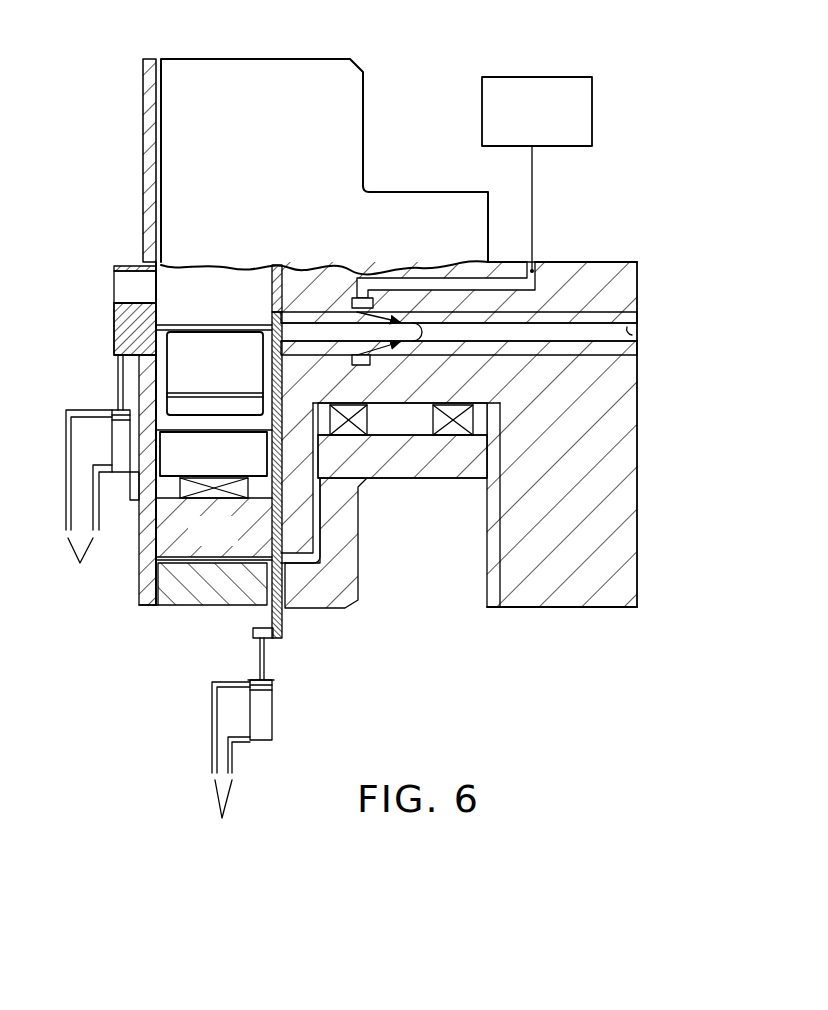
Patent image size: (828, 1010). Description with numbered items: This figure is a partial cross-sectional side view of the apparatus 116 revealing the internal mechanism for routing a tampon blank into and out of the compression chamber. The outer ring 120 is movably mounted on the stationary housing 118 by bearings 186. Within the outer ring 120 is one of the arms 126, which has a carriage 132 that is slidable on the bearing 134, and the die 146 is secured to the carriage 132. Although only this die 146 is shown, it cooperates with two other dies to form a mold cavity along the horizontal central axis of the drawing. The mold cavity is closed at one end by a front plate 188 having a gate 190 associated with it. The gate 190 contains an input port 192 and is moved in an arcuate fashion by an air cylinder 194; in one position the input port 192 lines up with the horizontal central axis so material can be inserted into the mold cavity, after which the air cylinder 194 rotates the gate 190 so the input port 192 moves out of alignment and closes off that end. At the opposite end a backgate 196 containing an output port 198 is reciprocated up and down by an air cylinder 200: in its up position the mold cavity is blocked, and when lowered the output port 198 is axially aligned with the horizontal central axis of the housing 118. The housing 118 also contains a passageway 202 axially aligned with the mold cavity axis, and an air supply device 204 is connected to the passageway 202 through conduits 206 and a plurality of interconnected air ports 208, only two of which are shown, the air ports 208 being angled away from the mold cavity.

The apparatus 116 is at (456, 46).
The stationary housing 118 is at (587, 255).
The outer ring 120 is at (295, 180).
The arm 126 is at (231, 545).
The carriage 132 is at (232, 466).
The bearing 134 is at (245, 488).
The die 146 is at (231, 380).
The bearings 186 is at (355, 435).
The front plate 188 is at (143, 190).
The gate 190 is at (114, 323).
The input port 192 is at (127, 303).
The air cylinder 194 is at (115, 447).
The backgate 196 is at (270, 321).
The output port 198 is at (270, 296).
The air cylinder 200 is at (272, 716).
The passageway 202 is at (633, 328).
The air supply device 204 is at (592, 108).
The conduits 206 is at (447, 276).
The air ports 208 is at (407, 350).